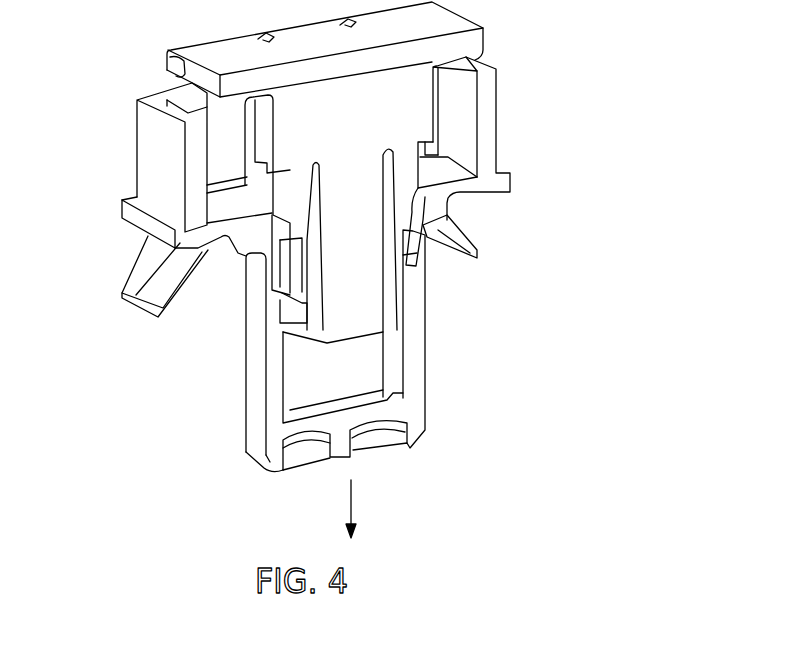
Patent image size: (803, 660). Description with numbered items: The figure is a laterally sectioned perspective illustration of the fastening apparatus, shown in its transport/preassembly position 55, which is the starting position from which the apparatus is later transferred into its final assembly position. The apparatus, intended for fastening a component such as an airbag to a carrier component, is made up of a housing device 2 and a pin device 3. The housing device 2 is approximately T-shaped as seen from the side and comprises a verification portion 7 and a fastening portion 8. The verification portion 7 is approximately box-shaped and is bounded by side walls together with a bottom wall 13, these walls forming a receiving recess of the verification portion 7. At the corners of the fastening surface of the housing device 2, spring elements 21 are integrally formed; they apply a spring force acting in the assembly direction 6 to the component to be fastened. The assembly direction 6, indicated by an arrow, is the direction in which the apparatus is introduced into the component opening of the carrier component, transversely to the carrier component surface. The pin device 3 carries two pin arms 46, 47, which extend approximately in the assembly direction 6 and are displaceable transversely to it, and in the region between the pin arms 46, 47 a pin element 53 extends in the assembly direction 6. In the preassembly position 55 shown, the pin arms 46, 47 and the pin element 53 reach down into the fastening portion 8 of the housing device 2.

The housing device 2 is at (145, 160).
The pin device 3 is at (355, 126).
The assembly direction 6 is at (352, 510).
The verification portion 7 is at (504, 83).
The fastening portion 8 is at (244, 401).
The bottom wall 13 is at (438, 172).
The spring elements 21 is at (137, 275).
The pin arm 46 is at (406, 258).
The pin arm 47 is at (270, 275).
The pin element 53 is at (363, 313).
The transport/preassembly position 55 is at (596, 79).